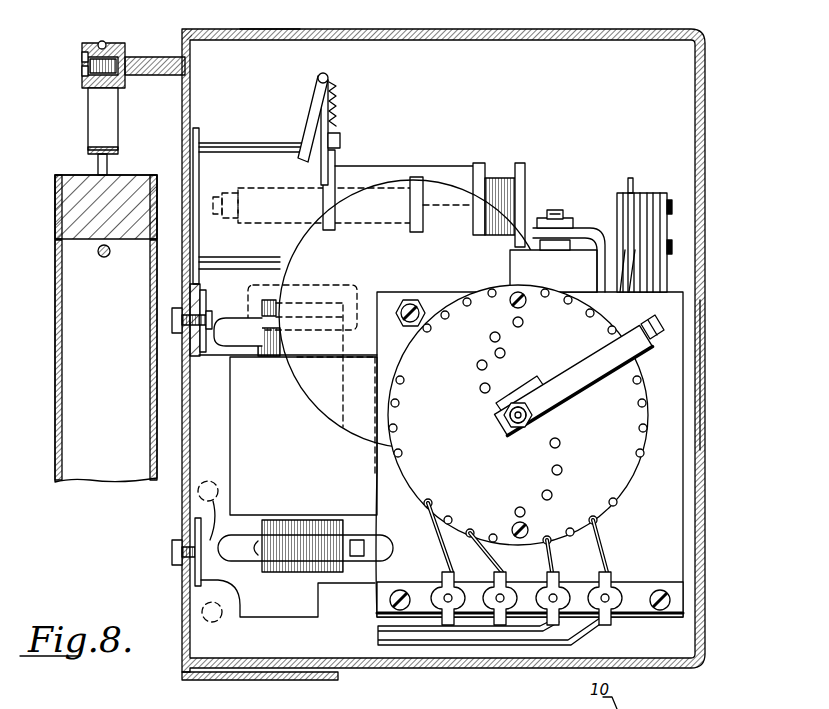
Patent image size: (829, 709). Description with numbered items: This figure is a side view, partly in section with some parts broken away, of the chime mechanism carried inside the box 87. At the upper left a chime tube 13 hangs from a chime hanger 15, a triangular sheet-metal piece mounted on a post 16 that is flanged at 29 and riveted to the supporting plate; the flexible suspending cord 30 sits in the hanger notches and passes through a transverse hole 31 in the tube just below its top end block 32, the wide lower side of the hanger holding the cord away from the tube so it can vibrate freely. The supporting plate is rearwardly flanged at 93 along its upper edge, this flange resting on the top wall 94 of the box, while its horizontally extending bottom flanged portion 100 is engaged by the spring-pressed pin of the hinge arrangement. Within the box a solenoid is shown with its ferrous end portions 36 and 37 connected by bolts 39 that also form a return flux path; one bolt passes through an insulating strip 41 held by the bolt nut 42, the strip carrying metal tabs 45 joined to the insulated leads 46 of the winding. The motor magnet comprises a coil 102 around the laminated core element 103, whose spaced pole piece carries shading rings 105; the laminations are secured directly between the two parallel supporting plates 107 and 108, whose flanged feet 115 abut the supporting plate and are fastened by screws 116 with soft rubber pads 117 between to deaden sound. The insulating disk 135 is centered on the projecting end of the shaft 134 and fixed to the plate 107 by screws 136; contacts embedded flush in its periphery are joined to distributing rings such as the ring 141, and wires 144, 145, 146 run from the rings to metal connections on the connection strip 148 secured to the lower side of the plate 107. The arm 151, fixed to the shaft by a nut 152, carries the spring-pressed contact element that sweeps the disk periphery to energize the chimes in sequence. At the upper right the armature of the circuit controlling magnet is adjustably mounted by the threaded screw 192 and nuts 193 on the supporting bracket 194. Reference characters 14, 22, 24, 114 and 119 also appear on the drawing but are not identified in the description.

The chime tube 13 is at (53, 452).
The housing wall 14 is at (190, 94).
The chime hanger 15 is at (108, 115).
The post 16 is at (143, 60).
The solenoid 22 is at (228, 165).
The solenoid plunger 24 is at (262, 188).
The flange 29 is at (112, 44).
The flexible suspending cord 30 is at (104, 166).
The transverse hole 31 is at (111, 251).
The top end block 32 is at (88, 246).
The end portion 36 is at (196, 128).
The end portion 37 is at (328, 158).
The bolts 39 is at (218, 140).
The insulating strip 41 is at (327, 128).
The bolt nut 42 is at (334, 138).
The metal tabs 45 is at (336, 86).
The insulated leads 46 is at (313, 93).
The box 87 is at (736, 377).
The rearward flange 93 is at (205, 32).
The top wall 94 is at (268, 31).
The bottom flanged portion 100 is at (252, 681).
The coil 102 is at (245, 403).
The laminated core element 103 is at (325, 532).
The shading rings 105 is at (262, 300).
The supporting plate 107 is at (530, 454).
The supporting plate 108 is at (298, 597).
The insulating bracket 114 is at (201, 297).
The feet 115 is at (207, 313).
The screws 116 is at (177, 330).
The rubber pads 117 is at (198, 516).
The disc 119 is at (392, 256).
The shaft 134 is at (520, 404).
The insulating disk 135 is at (640, 480).
The screws 136 is at (521, 308).
The distributing ring 141 is at (440, 558).
The wire 144 is at (607, 553).
The wire 145 is at (548, 561).
The wire 146 is at (497, 561).
The connection strip 148 is at (635, 585).
The arm 151 is at (580, 375).
The nut 152 is at (545, 423).
The threaded screw 192 is at (555, 210).
The nuts 193 is at (572, 226).
The supporting bracket 194 is at (588, 230).